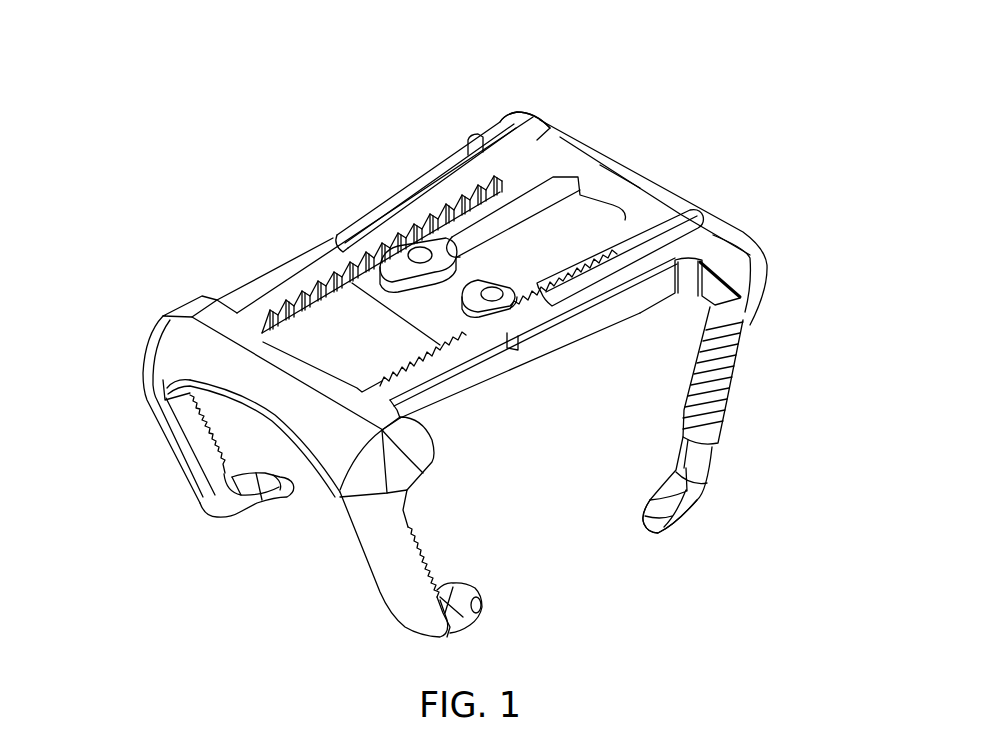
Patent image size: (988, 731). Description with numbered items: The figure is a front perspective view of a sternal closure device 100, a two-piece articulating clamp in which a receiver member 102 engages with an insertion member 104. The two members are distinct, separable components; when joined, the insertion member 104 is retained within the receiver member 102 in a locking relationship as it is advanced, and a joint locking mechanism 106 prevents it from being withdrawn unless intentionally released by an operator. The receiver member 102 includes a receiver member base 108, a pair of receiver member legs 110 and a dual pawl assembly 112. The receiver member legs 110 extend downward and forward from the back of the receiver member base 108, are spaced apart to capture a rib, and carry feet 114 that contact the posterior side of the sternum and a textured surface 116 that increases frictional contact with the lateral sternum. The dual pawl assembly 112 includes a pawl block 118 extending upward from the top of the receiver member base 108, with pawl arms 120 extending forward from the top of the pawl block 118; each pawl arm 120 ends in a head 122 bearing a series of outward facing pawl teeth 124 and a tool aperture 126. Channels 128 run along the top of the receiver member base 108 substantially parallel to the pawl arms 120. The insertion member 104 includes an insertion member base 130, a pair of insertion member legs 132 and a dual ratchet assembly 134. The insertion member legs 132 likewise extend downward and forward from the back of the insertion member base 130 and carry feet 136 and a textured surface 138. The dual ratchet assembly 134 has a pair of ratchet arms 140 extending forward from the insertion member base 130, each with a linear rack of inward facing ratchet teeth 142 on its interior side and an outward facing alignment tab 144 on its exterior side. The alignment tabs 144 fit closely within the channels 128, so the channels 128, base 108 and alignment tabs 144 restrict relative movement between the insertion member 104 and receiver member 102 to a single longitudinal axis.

The sternal closure device 100 is at (241, 173).
The receiver member 102 is at (824, 258).
The insertion member 104 is at (332, 546).
The joint locking mechanism 106 is at (373, 198).
The receiver member base 108 is at (578, 220).
The receiver member legs 110 is at (740, 315).
The dual pawl assembly 112 is at (688, 153).
The feet 114 is at (683, 513).
The textured surface 116 is at (728, 400).
The pawl block 118 is at (625, 178).
The pawl arms 120 is at (552, 178).
The head 122 is at (402, 255).
The pawl teeth 124 is at (430, 227).
The tool aperture 126 is at (492, 296).
The channels 128 is at (541, 366).
The insertion member base 130 is at (193, 365).
The insertion member legs 132 is at (193, 449).
The dual ratchet assembly 134 is at (268, 274).
The feet 136 is at (453, 597).
The textured surface 138 is at (413, 552).
The ratchet arms 140 is at (467, 347).
The ratchet teeth 142 is at (357, 272).
The alignment tab 144 is at (467, 383).